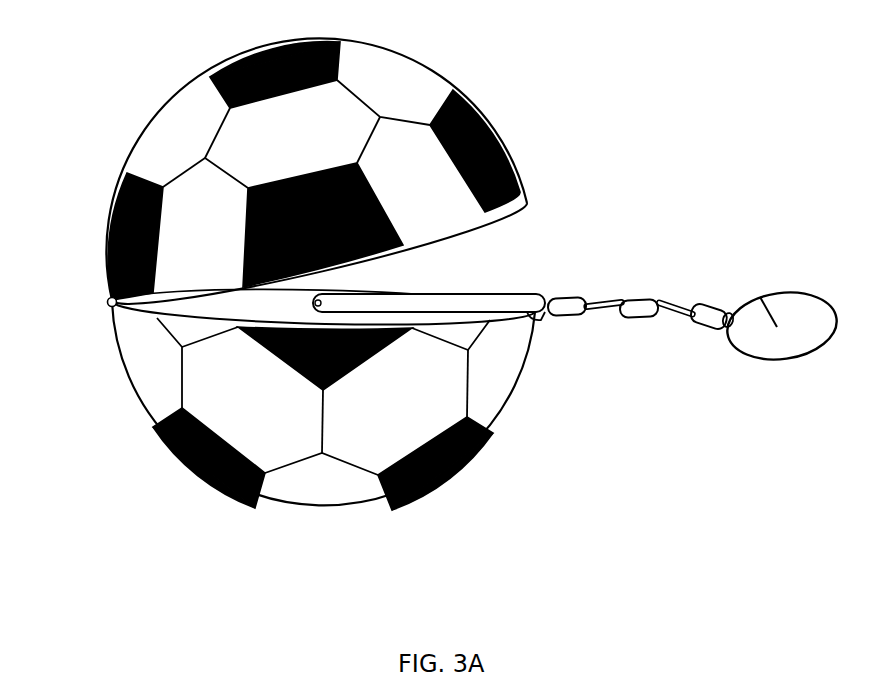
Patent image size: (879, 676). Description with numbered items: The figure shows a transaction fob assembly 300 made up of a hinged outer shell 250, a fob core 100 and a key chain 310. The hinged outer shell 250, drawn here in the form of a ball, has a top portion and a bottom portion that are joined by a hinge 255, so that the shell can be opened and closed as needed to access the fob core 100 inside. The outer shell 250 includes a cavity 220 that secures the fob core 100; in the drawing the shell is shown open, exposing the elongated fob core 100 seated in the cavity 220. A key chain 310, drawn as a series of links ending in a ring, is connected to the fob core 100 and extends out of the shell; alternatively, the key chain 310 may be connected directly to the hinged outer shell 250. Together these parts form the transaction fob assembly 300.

The hinged outer shell 250 is at (407, 100).
The hinge 255 is at (110, 297).
The fob core 100 is at (470, 303).
The cavity 220 is at (318, 302).
The key chain 310 is at (667, 303).
The transaction fob assembly 300 is at (500, 527).